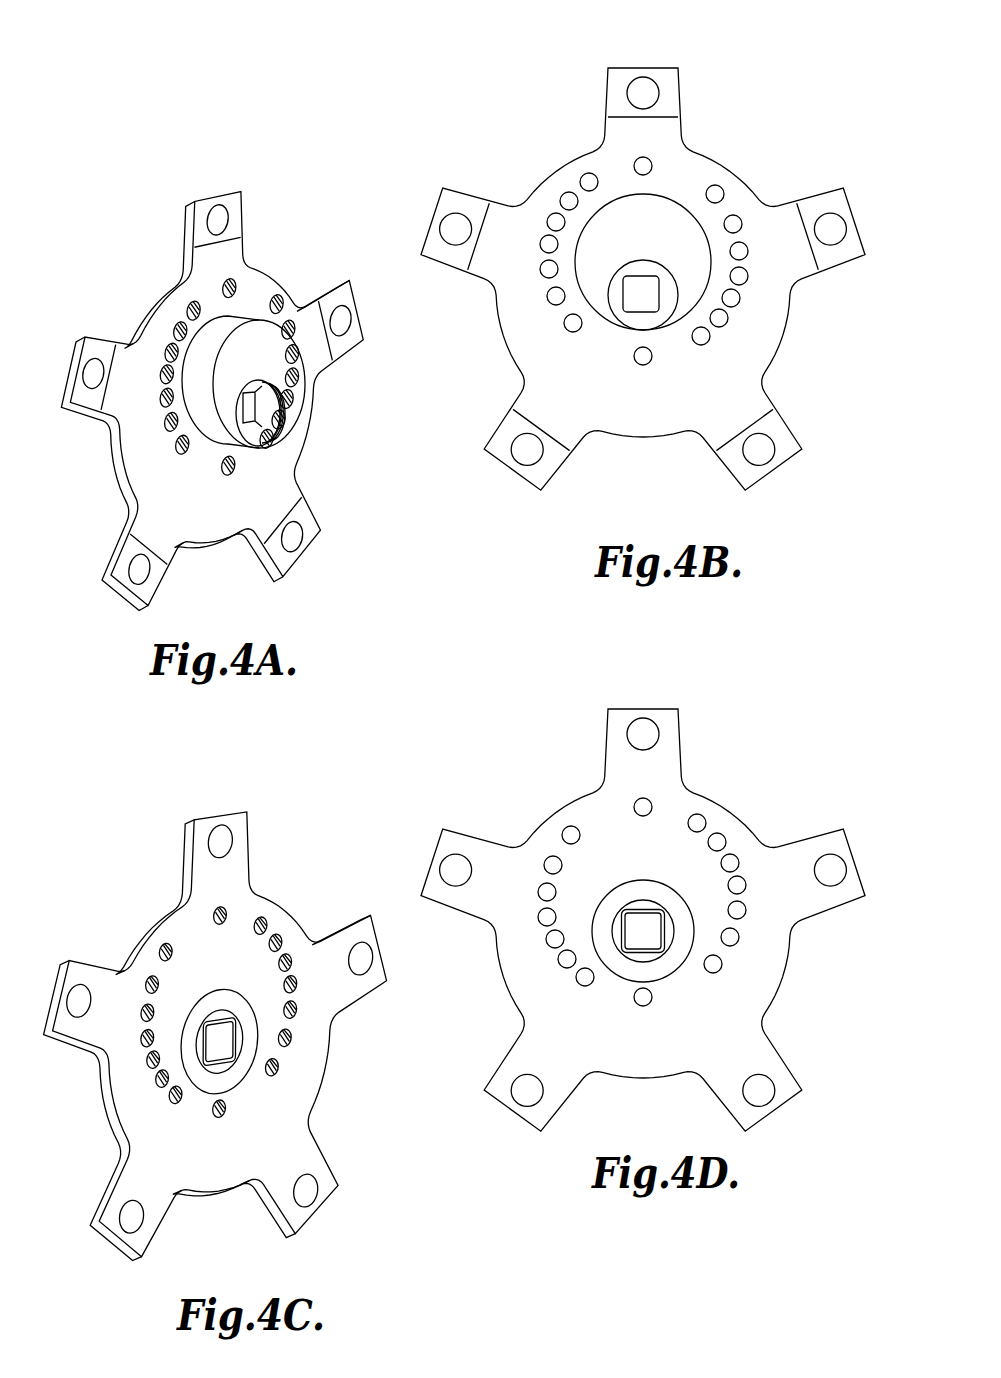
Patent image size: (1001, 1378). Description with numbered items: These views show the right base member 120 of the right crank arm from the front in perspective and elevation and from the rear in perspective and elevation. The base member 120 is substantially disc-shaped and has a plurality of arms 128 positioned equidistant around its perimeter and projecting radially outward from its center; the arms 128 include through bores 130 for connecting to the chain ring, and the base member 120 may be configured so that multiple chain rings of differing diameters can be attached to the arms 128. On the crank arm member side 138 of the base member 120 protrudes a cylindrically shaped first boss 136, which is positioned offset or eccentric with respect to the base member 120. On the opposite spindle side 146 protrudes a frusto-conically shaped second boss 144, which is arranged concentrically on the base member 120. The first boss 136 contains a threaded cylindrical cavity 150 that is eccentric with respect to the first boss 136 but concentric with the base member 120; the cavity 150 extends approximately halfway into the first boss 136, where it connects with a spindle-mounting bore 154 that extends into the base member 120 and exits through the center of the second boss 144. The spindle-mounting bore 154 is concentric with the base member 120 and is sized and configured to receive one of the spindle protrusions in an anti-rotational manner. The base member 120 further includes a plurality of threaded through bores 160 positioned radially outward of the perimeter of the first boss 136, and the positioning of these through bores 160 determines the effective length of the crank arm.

In FIG. 4A, the right base member 120 is at (229, 372).
In FIG. 4B, the right base member 120 is at (643, 261).
In FIG. 4C, the right base member 120 is at (216, 994).
In FIG. 4D, the right base member 120 is at (643, 920).
In FIG. 4A, the arms 128 is at (216, 386).
In FIG. 4B, the arms 128 is at (643, 271).
In FIG. 4C, the arms 128 is at (220, 1022).
In FIG. 4D, the arms 128 is at (643, 912).
In FIG. 4A, the through bores 130 is at (216, 386).
In FIG. 4B, the through bores 130 is at (643, 271).
In FIG. 4C, the through bores 130 is at (220, 1022).
In FIG. 4D, the through bores 130 is at (643, 912).
In FIG. 4A, the first boss 136 is at (290, 401).
In FIG. 4B, the first boss 136 is at (714, 205).
In FIG. 4A, the crank arm member side 138 is at (216, 393).
In FIG. 4B, the crank arm member side 138 is at (643, 279).
In FIG. 4C, the second boss 144 is at (219, 1041).
In FIG. 4D, the second boss 144 is at (722, 942).
In FIG. 4C, the spindle side 146 is at (219, 1030).
In FIG. 4D, the spindle side 146 is at (643, 920).
In FIG. 4A, the threaded cylindrical cavity 150 is at (311, 433).
In FIG. 4B, the threaded cylindrical cavity 150 is at (730, 311).
In FIG. 4A, the spindle-mounting bore 154 is at (253, 418).
In FIG. 4B, the spindle-mounting bore 154 is at (738, 294).
In FIG. 4C, the spindle-mounting bore 154 is at (219, 1041).
In FIG. 4D, the spindle-mounting bore 154 is at (738, 931).
In FIG. 4A, the through bores 160 is at (230, 377).
In FIG. 4B, the through bores 160 is at (644, 261).
In FIG. 4C, the through bores 160 is at (218, 1012).
In FIG. 4D, the through bores 160 is at (642, 902).